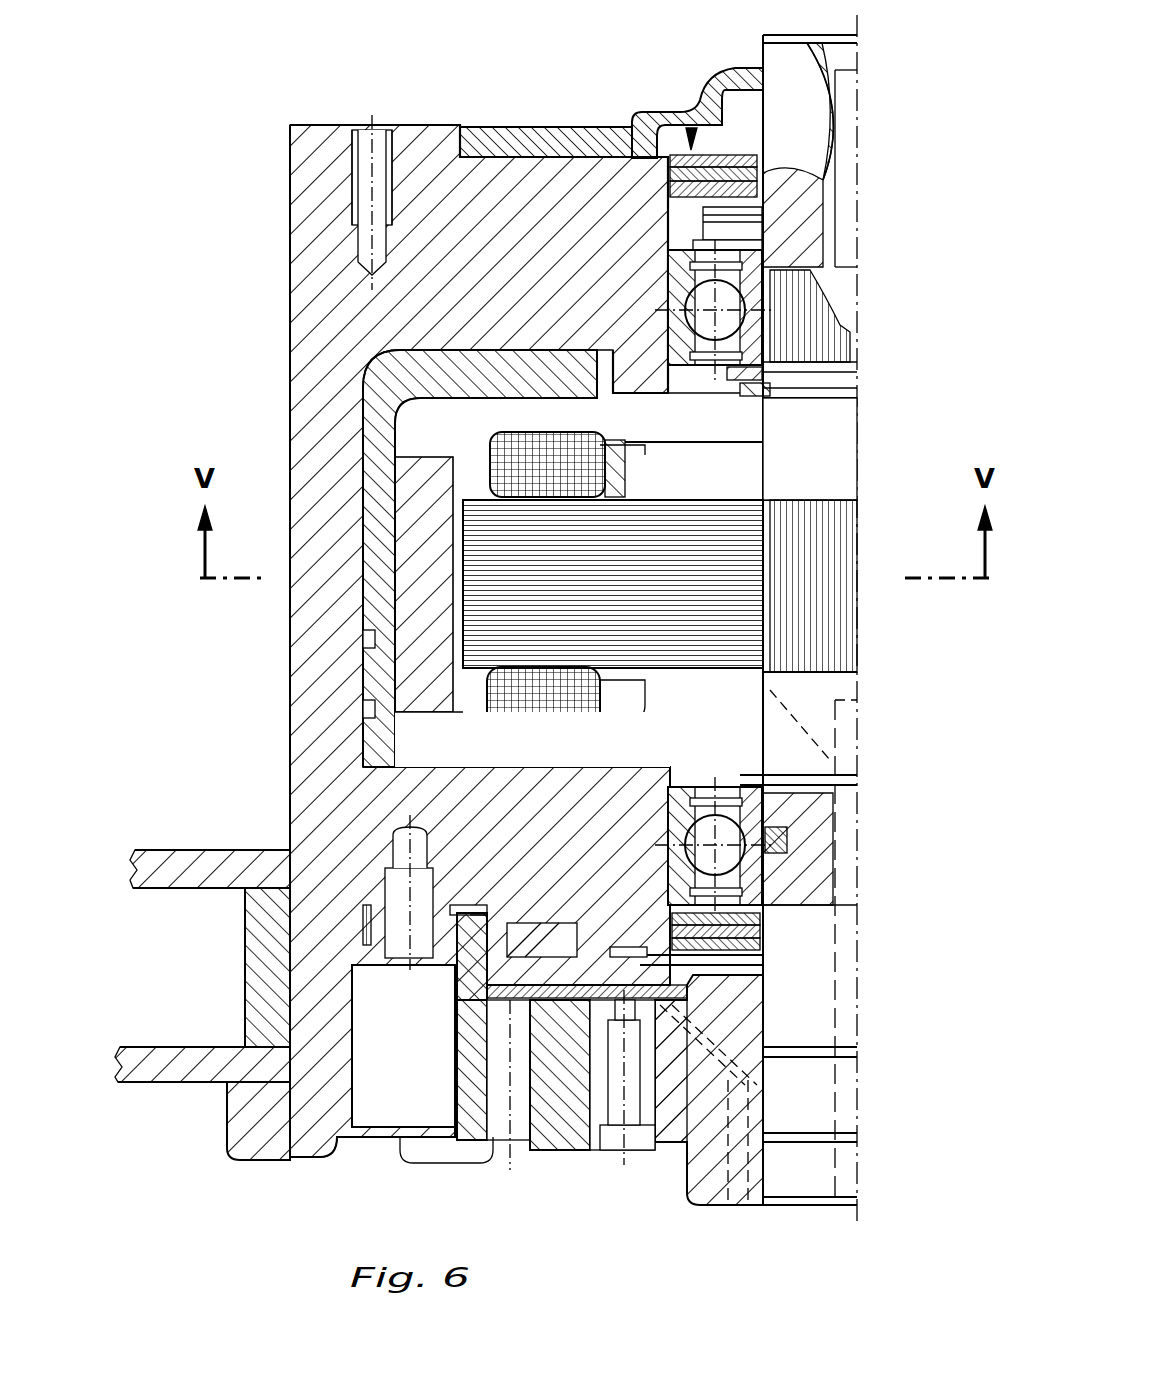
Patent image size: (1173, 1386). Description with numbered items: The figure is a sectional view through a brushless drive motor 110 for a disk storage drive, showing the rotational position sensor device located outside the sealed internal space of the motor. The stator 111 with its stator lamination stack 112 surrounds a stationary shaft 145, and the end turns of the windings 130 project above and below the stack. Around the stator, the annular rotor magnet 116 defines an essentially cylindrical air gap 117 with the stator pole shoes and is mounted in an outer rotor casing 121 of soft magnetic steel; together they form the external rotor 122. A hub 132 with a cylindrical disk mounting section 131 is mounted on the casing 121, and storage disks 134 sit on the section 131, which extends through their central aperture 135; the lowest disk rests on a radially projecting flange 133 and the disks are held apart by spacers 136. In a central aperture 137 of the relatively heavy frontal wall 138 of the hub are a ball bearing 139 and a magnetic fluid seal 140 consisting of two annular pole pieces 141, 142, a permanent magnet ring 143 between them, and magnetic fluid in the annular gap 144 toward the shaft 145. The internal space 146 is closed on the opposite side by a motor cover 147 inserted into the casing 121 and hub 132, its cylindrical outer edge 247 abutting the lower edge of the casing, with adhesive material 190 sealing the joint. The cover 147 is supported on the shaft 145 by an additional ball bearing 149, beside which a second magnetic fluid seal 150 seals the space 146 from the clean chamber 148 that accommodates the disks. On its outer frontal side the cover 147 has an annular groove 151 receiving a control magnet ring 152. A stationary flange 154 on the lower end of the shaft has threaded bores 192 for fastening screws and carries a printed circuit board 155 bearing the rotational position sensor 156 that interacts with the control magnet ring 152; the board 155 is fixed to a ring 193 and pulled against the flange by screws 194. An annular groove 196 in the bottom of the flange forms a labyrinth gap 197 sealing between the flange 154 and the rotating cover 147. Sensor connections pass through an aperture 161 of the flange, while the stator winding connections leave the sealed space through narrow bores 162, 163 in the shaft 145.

The brushless drive motor 110 is at (868, 496).
The stator 111 is at (725, 488).
The stator lamination stack 112 is at (750, 625).
The rotor magnet 116 is at (400, 520).
The air gap 117 is at (445, 605).
The outer rotor casing 121 is at (395, 715).
The external rotor 122 is at (270, 232).
The end turns of the windings 130 is at (515, 450).
The disk mounting section 131 is at (380, 700).
The hub 132 is at (437, 125).
The flange 133 is at (242, 1143).
The storage disks 134 is at (168, 860).
The central aperture 135 is at (300, 1080).
The spacers 136 is at (258, 1020).
The central aperture 137 is at (680, 385).
The frontal wall 138 is at (530, 150).
The ball bearing 139 is at (790, 340).
The magnetic fluid seal 140 is at (690, 128).
The annular pole piece 141 is at (728, 175).
The annular pole piece 142 is at (790, 236).
The permanent magnet ring 143 is at (770, 200).
The annular gap 144 is at (755, 178).
The stationary shaft 145 is at (840, 428).
The internal space 146 is at (462, 758).
The motor cover 147 is at (385, 855).
The clean chamber 148 is at (205, 686).
The ball bearing 149 is at (760, 862).
The magnetic fluid seal 150 is at (740, 940).
The annular groove 151 is at (597, 950).
The control magnet ring 152 is at (468, 950).
The stationary flange 154 is at (565, 1130).
The printed circuit board 155 is at (700, 985).
The rotational position sensor 156 is at (490, 1005).
The aperture 161 is at (735, 1160).
The bore 162 is at (830, 765).
The bore 163 is at (840, 1015).
The adhesive material 190 is at (390, 945).
The threaded bores 192 is at (500, 1130).
The ring 193 is at (672, 1100).
The screws 194 is at (635, 1145).
The annular groove 196 is at (470, 945).
The labyrinth gap 197 is at (395, 975).
The cylindrical outer edge 247 is at (400, 760).